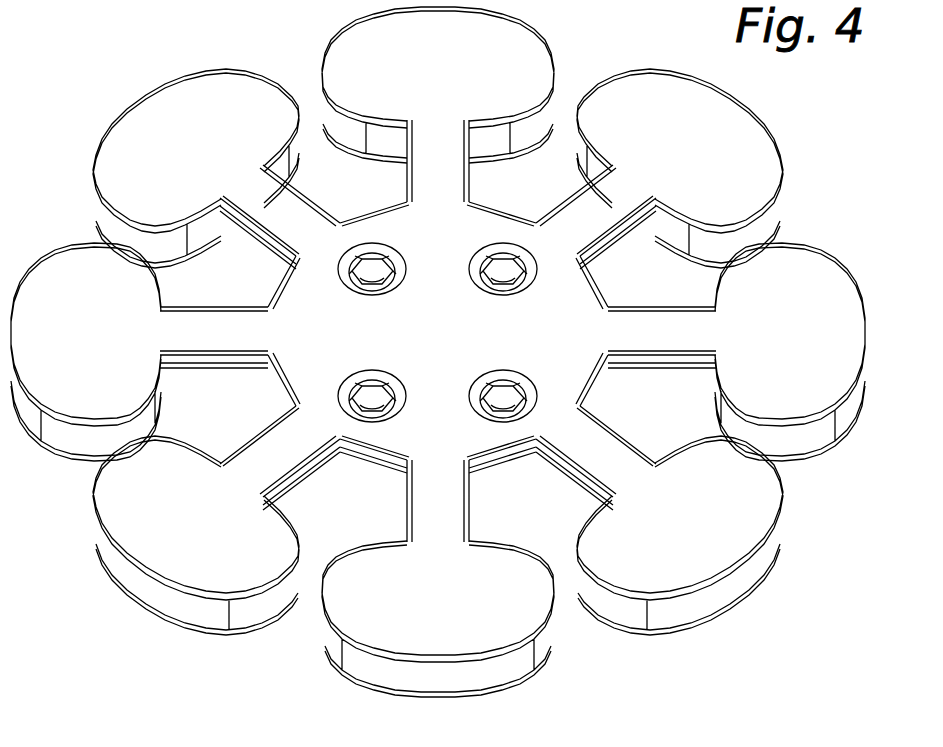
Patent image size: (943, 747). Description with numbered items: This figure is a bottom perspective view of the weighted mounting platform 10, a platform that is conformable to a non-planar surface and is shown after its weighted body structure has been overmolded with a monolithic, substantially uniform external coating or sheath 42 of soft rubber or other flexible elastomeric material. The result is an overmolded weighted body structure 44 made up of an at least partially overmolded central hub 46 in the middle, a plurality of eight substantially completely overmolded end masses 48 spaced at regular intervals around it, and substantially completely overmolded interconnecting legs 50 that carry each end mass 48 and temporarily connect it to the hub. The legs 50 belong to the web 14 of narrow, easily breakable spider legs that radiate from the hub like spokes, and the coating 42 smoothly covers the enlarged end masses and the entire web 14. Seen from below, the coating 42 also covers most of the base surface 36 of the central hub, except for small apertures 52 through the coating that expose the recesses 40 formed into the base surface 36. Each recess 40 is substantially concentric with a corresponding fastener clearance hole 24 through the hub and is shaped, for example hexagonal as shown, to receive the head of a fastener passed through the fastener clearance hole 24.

The weighted mounting platform 10 is at (101, 78).
The web 14 is at (574, 205).
The fastener clearance holes 24 is at (372, 288).
The base surface 36 is at (482, 389).
The recesses 40 is at (392, 263).
The external coating or sheath 42 is at (762, 556).
The overmolded weighted body structure 44 is at (778, 113).
The overmolded central hub 46 is at (378, 206).
The overmolded end masses 48 is at (452, 70).
The overmolded interconnecting legs 50 is at (308, 202).
The apertures 52 is at (342, 266).